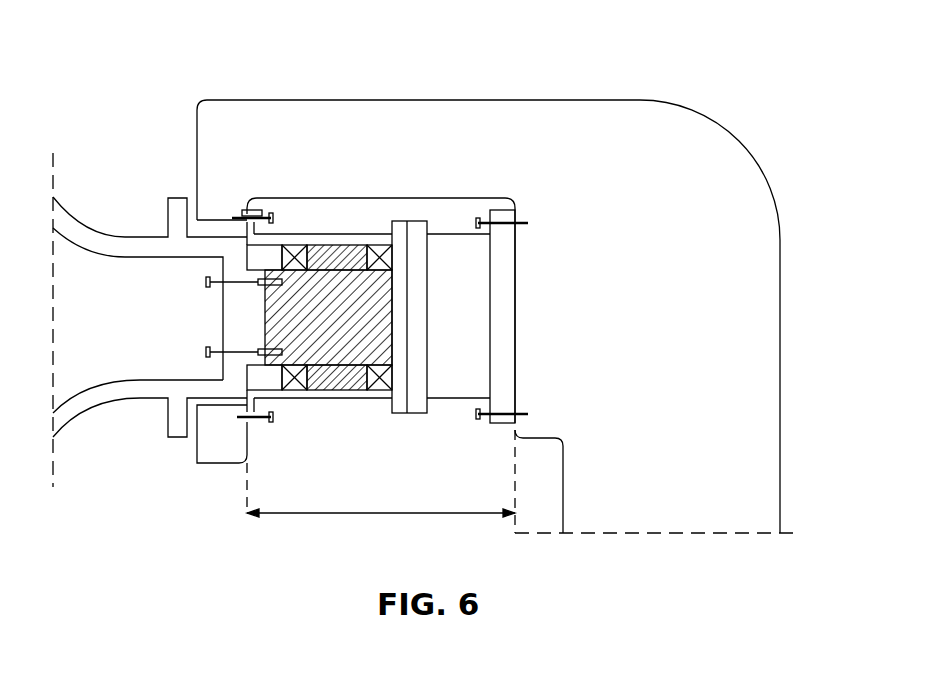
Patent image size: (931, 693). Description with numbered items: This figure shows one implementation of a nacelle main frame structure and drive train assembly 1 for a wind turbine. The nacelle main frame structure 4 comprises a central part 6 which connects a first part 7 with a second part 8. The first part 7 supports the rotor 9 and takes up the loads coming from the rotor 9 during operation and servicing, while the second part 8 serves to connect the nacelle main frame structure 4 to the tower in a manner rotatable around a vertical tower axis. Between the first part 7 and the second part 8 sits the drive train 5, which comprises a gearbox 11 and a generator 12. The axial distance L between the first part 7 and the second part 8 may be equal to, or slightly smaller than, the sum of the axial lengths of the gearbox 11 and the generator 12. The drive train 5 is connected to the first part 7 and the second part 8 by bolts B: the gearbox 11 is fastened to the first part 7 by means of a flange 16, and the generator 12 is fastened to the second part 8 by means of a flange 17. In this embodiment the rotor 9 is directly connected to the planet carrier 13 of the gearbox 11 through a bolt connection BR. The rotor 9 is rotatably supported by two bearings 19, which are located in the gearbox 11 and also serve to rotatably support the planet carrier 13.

The nacelle main frame structure and drive train assembly 1 is at (705, 86).
The nacelle main frame structure 4 is at (707, 162).
The drive train 5 is at (465, 476).
The central part 6 is at (401, 167).
The first part 7 is at (224, 167).
The second part 8 is at (711, 347).
The rotor 9 is at (132, 278).
The gearbox 11 is at (323, 393).
The generator 12 is at (442, 392).
The planet carrier 13 is at (345, 262).
The flange 16 is at (250, 212).
The flange 17 is at (498, 243).
The bearing 19 is at (375, 252).
The bolts B is at (267, 213).
The bolt connection BR is at (235, 352).
The axial distance L is at (381, 530).